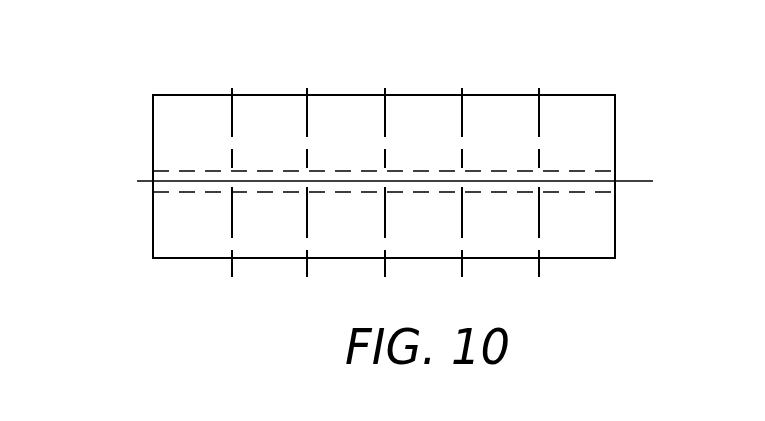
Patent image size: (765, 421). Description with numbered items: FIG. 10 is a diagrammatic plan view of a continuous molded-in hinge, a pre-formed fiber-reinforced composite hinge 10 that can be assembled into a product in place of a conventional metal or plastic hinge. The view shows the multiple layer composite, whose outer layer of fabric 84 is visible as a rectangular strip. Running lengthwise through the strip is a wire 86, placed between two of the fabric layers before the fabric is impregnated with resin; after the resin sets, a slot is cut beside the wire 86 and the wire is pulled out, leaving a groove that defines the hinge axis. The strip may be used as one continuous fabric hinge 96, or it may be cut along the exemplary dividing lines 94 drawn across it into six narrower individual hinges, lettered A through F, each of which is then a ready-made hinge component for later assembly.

The sensor assembly 10 is at (152, 54).
The layer of fabric 84 is at (597, 240).
The wire 86 is at (616, 172).
The dividing lines 94 is at (539, 88).
The fabric hinge 96 is at (143, 134).